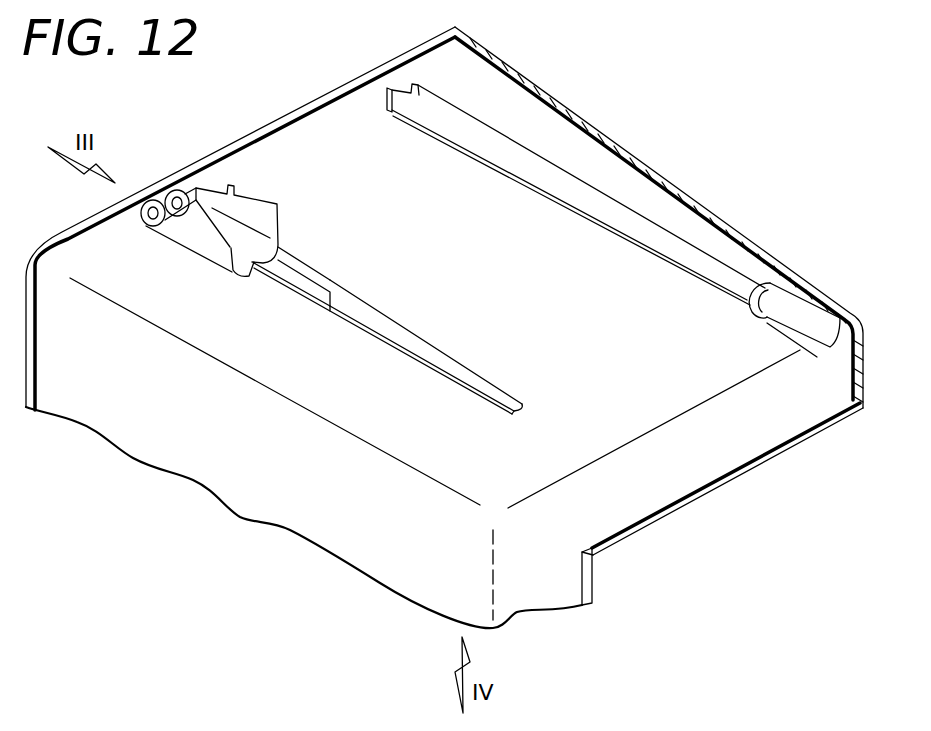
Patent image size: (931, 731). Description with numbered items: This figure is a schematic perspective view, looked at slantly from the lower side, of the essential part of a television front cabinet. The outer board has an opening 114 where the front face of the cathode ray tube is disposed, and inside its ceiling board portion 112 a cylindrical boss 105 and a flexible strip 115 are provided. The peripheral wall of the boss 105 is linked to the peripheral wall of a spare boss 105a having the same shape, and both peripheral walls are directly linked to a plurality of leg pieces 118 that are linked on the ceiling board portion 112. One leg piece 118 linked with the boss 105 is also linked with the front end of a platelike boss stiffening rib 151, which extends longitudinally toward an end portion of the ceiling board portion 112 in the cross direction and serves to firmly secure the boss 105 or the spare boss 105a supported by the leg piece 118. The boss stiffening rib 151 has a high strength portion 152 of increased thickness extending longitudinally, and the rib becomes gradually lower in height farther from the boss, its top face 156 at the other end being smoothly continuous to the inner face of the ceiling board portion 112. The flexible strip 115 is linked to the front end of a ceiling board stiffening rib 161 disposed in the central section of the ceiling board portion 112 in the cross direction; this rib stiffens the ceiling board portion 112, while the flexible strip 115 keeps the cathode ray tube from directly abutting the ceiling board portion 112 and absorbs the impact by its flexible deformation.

The cylindrical boss 105 is at (200, 245).
The spare boss 105a is at (230, 237).
The ceiling board portion 112 is at (312, 98).
The opening 114 is at (747, 472).
The flexible strip 115 is at (782, 308).
The leg piece 118 is at (243, 197).
The boss stiffening rib 151 is at (388, 328).
The high strength portion 152 is at (313, 275).
The top face 156 is at (510, 397).
The ceiling board stiffening rib 161 is at (562, 183).